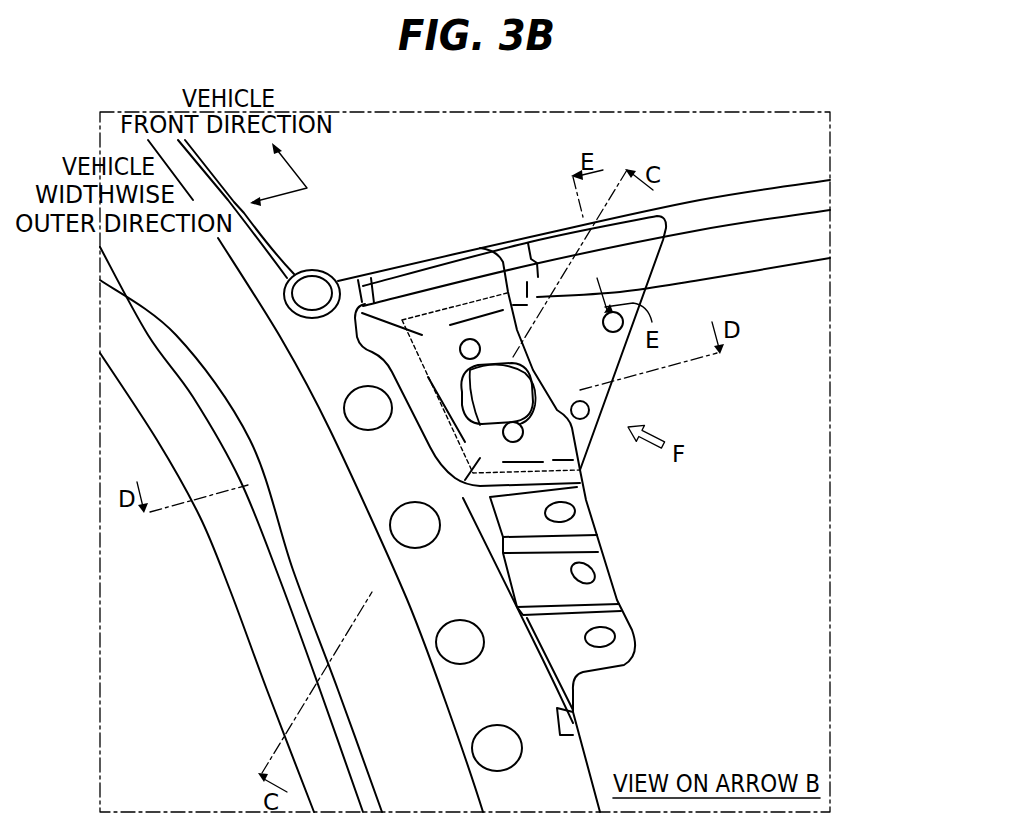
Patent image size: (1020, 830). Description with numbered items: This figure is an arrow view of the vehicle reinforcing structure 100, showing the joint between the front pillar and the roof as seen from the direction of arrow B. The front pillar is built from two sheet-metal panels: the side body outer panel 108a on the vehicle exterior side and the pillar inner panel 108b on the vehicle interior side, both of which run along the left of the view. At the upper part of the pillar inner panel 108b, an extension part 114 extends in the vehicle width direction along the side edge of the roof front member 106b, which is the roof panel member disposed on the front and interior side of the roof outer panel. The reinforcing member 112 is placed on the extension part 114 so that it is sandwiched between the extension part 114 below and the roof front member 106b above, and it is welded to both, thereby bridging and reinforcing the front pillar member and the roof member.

The vehicle reinforcing structure 100 is at (410, 206).
The reinforcing member 112 is at (652, 228).
The extension part 114 is at (471, 316).
The roof front member 106b is at (737, 530).
The side body outer panel 108a is at (225, 572).
The pillar inner panel 108b is at (337, 597).